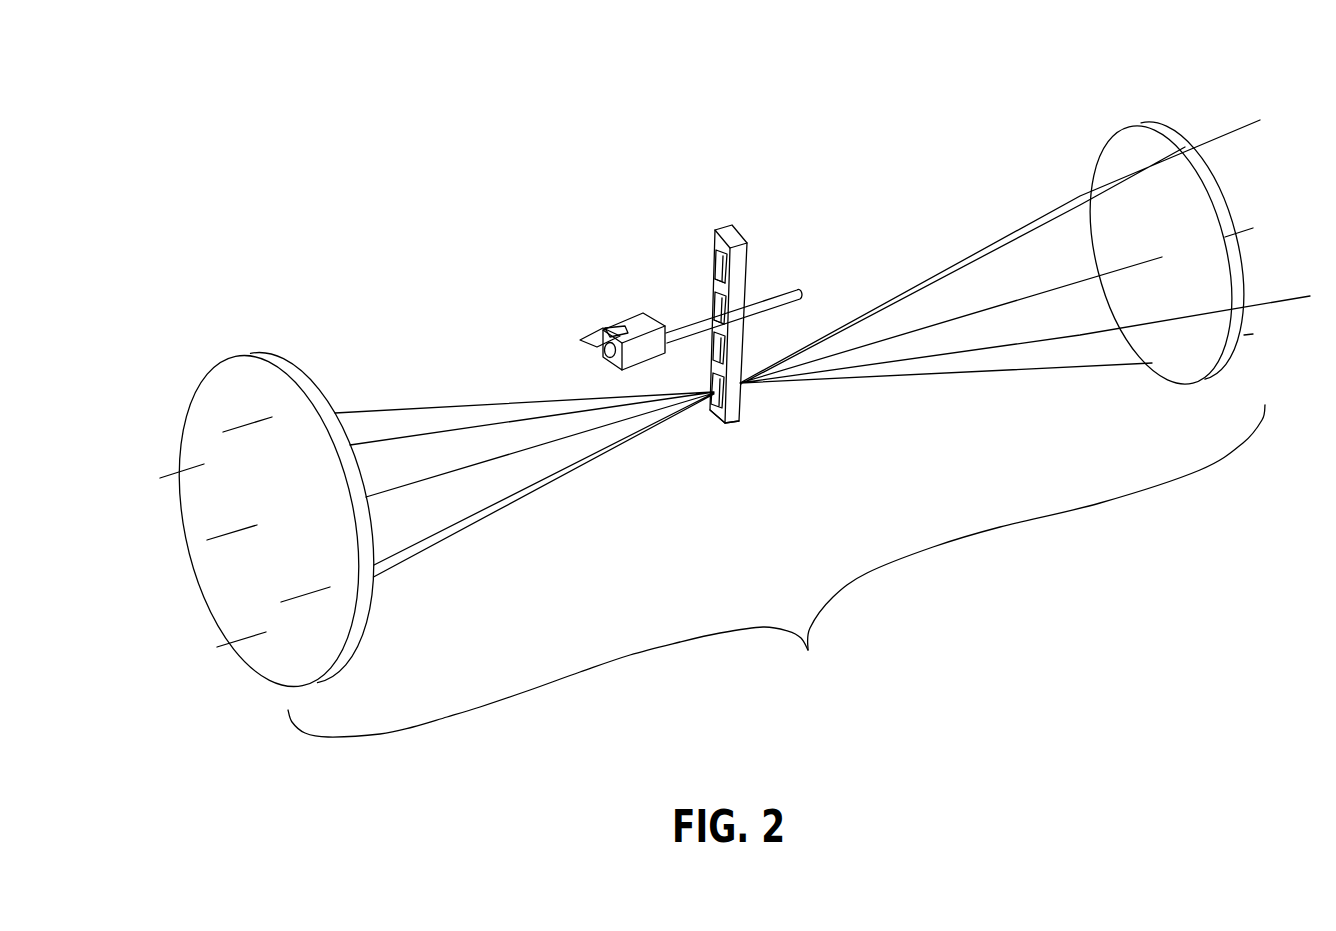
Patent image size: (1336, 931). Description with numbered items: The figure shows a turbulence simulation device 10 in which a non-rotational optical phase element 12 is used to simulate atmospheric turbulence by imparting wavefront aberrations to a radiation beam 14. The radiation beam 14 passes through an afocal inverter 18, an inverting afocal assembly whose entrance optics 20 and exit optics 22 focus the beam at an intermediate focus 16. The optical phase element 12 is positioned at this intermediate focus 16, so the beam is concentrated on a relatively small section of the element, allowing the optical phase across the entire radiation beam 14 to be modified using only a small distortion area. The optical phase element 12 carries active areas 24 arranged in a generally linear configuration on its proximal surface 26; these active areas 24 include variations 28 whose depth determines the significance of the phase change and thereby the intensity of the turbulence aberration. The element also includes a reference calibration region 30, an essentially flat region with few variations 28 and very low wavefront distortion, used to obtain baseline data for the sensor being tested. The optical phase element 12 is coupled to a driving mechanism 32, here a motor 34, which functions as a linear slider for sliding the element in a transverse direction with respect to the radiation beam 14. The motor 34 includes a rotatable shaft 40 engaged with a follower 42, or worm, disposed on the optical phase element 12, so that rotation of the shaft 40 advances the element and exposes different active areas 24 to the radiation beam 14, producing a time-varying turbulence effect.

The turbulence simulation device 10 is at (585, 119).
The optical phase element 12 is at (729, 233).
The radiation beam 14 is at (510, 505).
The intermediate focus 16 is at (722, 427).
The afocal inverter 18 is at (799, 428).
The entrance optics 20 is at (245, 372).
The exit optics 22 is at (1135, 143).
The active areas 24 is at (722, 348).
The proximal surface 26 is at (720, 287).
The variations 28 is at (721, 308).
The reference calibration region 30 is at (717, 268).
The driving mechanism 32 is at (601, 291).
The motor 34 is at (628, 357).
The rotatable shaft 40 is at (802, 293).
The follower 42 is at (710, 327).